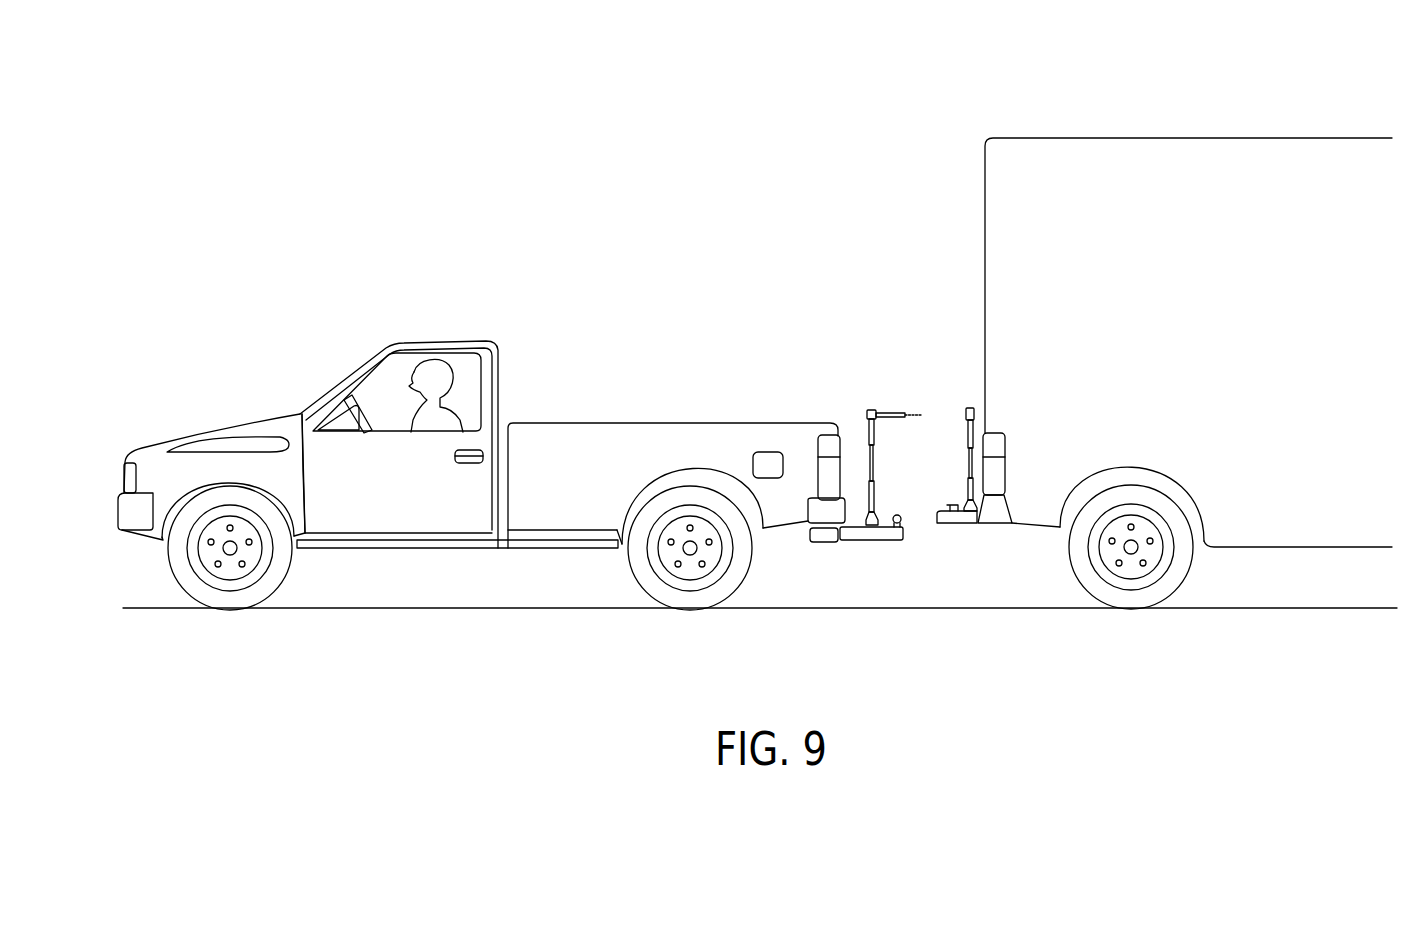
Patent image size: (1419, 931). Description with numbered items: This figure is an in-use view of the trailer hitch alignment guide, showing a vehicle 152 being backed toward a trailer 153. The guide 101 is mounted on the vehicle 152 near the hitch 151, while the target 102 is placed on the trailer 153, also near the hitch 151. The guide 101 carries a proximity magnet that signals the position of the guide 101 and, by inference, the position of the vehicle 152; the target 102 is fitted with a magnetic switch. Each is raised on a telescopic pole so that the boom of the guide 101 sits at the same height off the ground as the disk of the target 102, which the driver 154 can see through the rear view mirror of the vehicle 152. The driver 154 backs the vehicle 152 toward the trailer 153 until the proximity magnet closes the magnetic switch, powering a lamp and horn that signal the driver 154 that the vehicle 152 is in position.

The guide 101 is at (893, 416).
The target 102 is at (970, 407).
The hitch 151 is at (968, 518).
The vehicle 152 is at (606, 441).
The trailer 153 is at (1136, 157).
The driver 154 is at (428, 366).